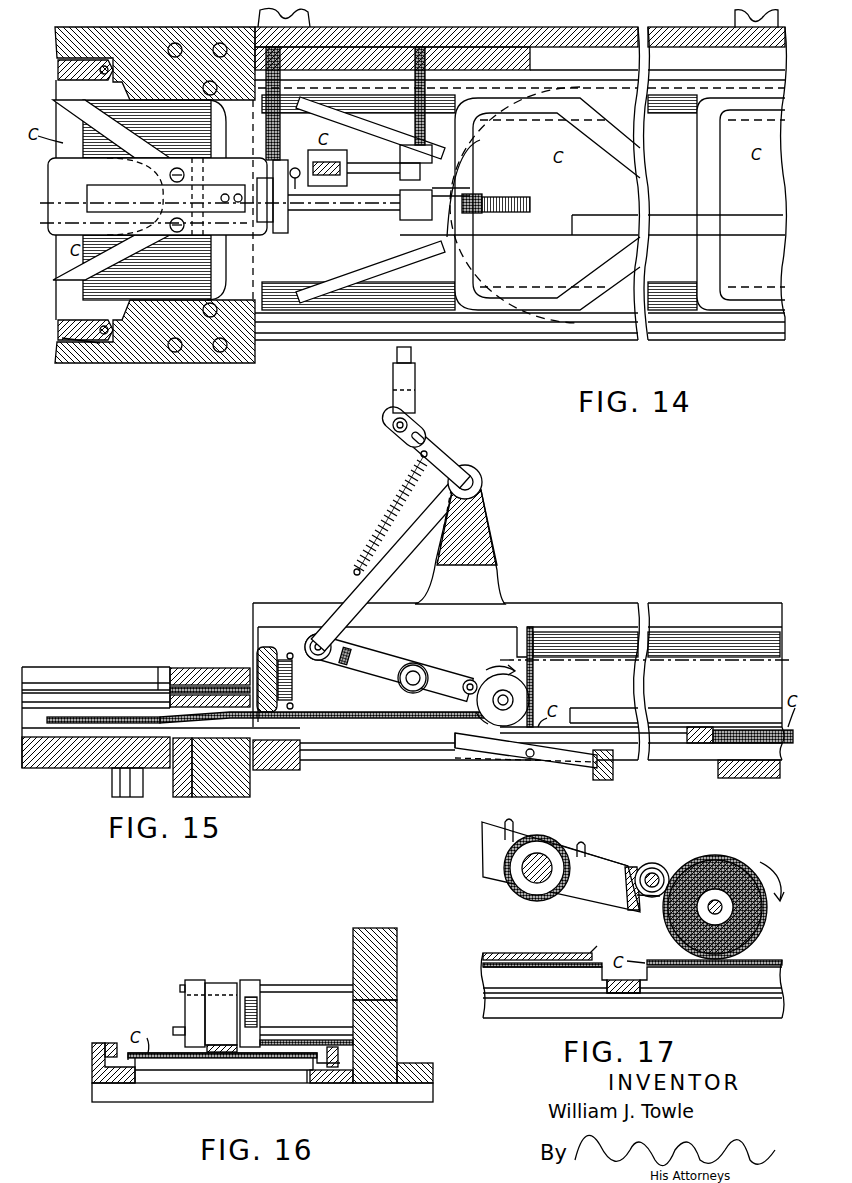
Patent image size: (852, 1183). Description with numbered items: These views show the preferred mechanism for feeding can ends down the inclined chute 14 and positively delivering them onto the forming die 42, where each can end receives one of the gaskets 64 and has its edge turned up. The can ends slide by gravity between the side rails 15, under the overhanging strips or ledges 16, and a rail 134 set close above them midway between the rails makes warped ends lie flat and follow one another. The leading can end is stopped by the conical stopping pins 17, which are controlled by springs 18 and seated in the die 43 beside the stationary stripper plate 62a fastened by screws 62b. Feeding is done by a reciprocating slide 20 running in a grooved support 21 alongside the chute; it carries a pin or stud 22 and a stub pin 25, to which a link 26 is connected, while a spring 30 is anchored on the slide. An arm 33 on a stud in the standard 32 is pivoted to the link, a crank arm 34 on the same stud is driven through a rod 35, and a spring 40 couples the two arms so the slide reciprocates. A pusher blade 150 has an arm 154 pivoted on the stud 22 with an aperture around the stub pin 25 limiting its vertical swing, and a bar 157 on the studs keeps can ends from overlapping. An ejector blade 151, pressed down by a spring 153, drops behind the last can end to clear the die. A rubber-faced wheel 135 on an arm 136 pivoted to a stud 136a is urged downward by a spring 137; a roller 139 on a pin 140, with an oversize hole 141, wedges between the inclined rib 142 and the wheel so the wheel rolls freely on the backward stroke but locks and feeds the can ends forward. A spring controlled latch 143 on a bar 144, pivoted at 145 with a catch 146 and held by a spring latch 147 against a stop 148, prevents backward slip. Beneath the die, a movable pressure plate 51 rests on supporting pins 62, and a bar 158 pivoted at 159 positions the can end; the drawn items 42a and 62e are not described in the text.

In FIG. 14, the chute 14 is at (552, 337).
In FIG. 15, the chute 14 is at (27, 700).
In FIG. 16, the chute 14 is at (138, 1102).
In FIG. 17, the chute 14 is at (542, 1018).
In FIG. 14, the side rails 15 is at (757, 252).
In FIG. 16, the side rails 15 is at (92, 1063).
In FIG. 14, the overhanging strips or ledges 16 is at (440, 320).
In FIG. 15, the overhanging strips or ledges 16 is at (325, 565).
In FIG. 16, the overhanging strips or ledges 16 is at (112, 1043).
In FIG. 14, the conical stopping pins 17 is at (222, 108).
In FIG. 14, the springs 18 is at (313, 228).
In FIG. 14, the reciprocating slide 20 is at (462, 47).
In FIG. 15, the reciprocating slide 20 is at (503, 624).
In FIG. 16, the reciprocating slide 20 is at (370, 965).
In FIG. 14, the grooved support 21 is at (580, 36).
In FIG. 15, the grooved support 21 is at (660, 604).
In FIG. 16, the grooved support 21 is at (397, 932).
In FIG. 15, the pin or stud 22 is at (275, 760).
In FIG. 16, the pin or stud 22 is at (300, 1035).
In FIG. 15, the stub pin 25 is at (271, 656).
In FIG. 16, the stub pin 25 is at (320, 970).
In FIG. 14, the link 26 is at (360, 160).
In FIG. 15, the link 26 is at (366, 664).
In FIG. 17, the link 26 is at (480, 862).
In FIG. 14, the spring 30 is at (296, 167).
In FIG. 15, the spring 30 is at (305, 680).
In FIG. 16, the spring 30 is at (262, 1012).
In FIG. 15, the standard 32 is at (483, 518).
In FIG. 15, the arm 33 is at (418, 530).
In FIG. 15, the crank arm 34 is at (437, 447).
In FIG. 15, the rod 35 is at (393, 358).
In FIG. 15, the spring 40 is at (402, 474).
In FIG. 15, the forming die 42 is at (233, 785).
In FIG. 14, the bolt 42a is at (176, 44).
In FIG. 14, the die 43 is at (120, 363).
In FIG. 15, the die 43 is at (219, 683).
In FIG. 15, the movable pressure plate 51 is at (63, 760).
In FIG. 15, the supporting pins 62 is at (120, 783).
In FIG. 15, the stationary stripper plate 62a is at (77, 673).
In FIG. 14, the screws 62b is at (221, 43).
In FIG. 15, the plate 62e is at (193, 690).
In FIG. 15, the gaskets 64 is at (158, 667).
In FIG. 14, the rail 134 is at (725, 222).
In FIG. 15, the rail 134 is at (694, 712).
In FIG. 14, the wheel 135 is at (527, 196).
In FIG. 15, the wheel 135 is at (530, 690).
In FIG. 17, the wheel 135 is at (733, 867).
In FIG. 14, the arm 136 is at (478, 192).
In FIG. 17, the arm 136 is at (590, 867).
In FIG. 14, the stud 136a is at (433, 136).
In FIG. 15, the stud 136a is at (401, 690).
In FIG. 17, the stud 136a is at (542, 855).
In FIG. 15, the spring 137 is at (410, 664).
In FIG. 17, the spring 137 is at (510, 887).
In FIG. 14, the roller 139 is at (477, 213).
In FIG. 15, the roller 139 is at (496, 660).
In FIG. 17, the roller 139 is at (661, 866).
In FIG. 17, the pin 140 is at (652, 864).
In FIG. 17, the hole 141 is at (647, 894).
In FIG. 15, the rib 142 is at (470, 680).
In FIG. 17, the rib 142 is at (627, 892).
In FIG. 15, the spring controlled latch 143 is at (577, 765).
In FIG. 15, the bar 144 is at (337, 752).
In FIG. 15, the pivot 145 is at (527, 757).
In FIG. 15, the catch 146 is at (478, 722).
In FIG. 15, the spring latch 147 is at (613, 772).
In FIG. 15, the stop 148 is at (465, 760).
In FIG. 15, the pusher blade 150 is at (190, 782).
In FIG. 14, the ejector blade 151 is at (72, 228).
In FIG. 15, the ejector blade 151 is at (63, 717).
In FIG. 14, the spring 153 is at (107, 190).
In FIG. 15, the spring 153 is at (135, 717).
In FIG. 16, the arm 154 is at (195, 980).
In FIG. 14, the bar 157 is at (347, 203).
In FIG. 15, the bar 157 is at (328, 720).
In FIG. 16, the bar 157 is at (218, 983).
In FIG. 17, the bar 157 is at (543, 953).
In FIG. 14, the bar 158 is at (60, 66).
In FIG. 14, the pivot 159 is at (100, 343).